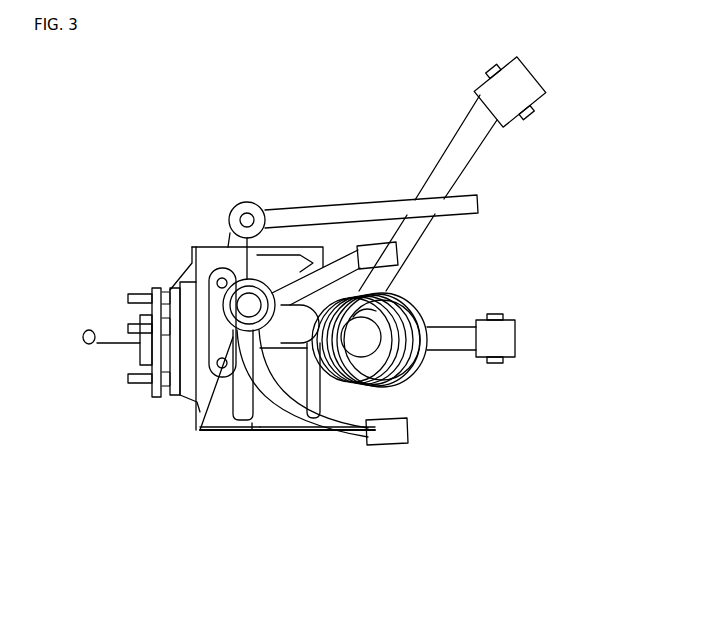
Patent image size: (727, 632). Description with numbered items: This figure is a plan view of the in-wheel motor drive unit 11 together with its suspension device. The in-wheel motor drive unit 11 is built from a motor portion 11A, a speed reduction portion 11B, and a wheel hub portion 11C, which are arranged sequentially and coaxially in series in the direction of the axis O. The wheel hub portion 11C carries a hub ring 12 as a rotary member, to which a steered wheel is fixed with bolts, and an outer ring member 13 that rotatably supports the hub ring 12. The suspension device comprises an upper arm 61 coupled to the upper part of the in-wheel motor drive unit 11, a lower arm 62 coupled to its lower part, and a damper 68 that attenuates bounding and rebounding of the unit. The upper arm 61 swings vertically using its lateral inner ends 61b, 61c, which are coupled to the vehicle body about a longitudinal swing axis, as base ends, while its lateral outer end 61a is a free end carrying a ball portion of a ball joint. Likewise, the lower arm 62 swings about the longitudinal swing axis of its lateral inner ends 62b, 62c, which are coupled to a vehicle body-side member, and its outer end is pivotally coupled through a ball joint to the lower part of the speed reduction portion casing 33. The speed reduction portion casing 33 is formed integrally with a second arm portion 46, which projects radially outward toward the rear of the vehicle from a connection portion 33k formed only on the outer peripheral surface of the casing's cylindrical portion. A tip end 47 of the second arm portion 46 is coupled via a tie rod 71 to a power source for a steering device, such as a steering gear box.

The in-wheel motor drive unit 11 is at (324, 396).
The motor portion 11A is at (280, 434).
The speed reduction portion 11B is at (224, 434).
The wheel hub portion 11C is at (145, 396).
The hub ring 12 is at (151, 290).
The outer ring member 13 is at (172, 290).
The speed reduction portion casing 33 is at (190, 268).
The connection portion 33k is at (224, 252).
The second arm portion 46 is at (232, 240).
The tip end 47 is at (247, 201).
The tie rod 71 is at (328, 210).
The lower arm 62 is at (452, 351).
The lateral inner end 62b is at (506, 337).
The lateral inner end 62c is at (523, 84).
The damper 68 is at (374, 336).
The upper arm 61 is at (325, 438).
The lateral outer end 61a is at (207, 413).
The lateral inner end 61b is at (406, 442).
The lateral inner end 61c is at (385, 258).
The axis O is at (105, 338).